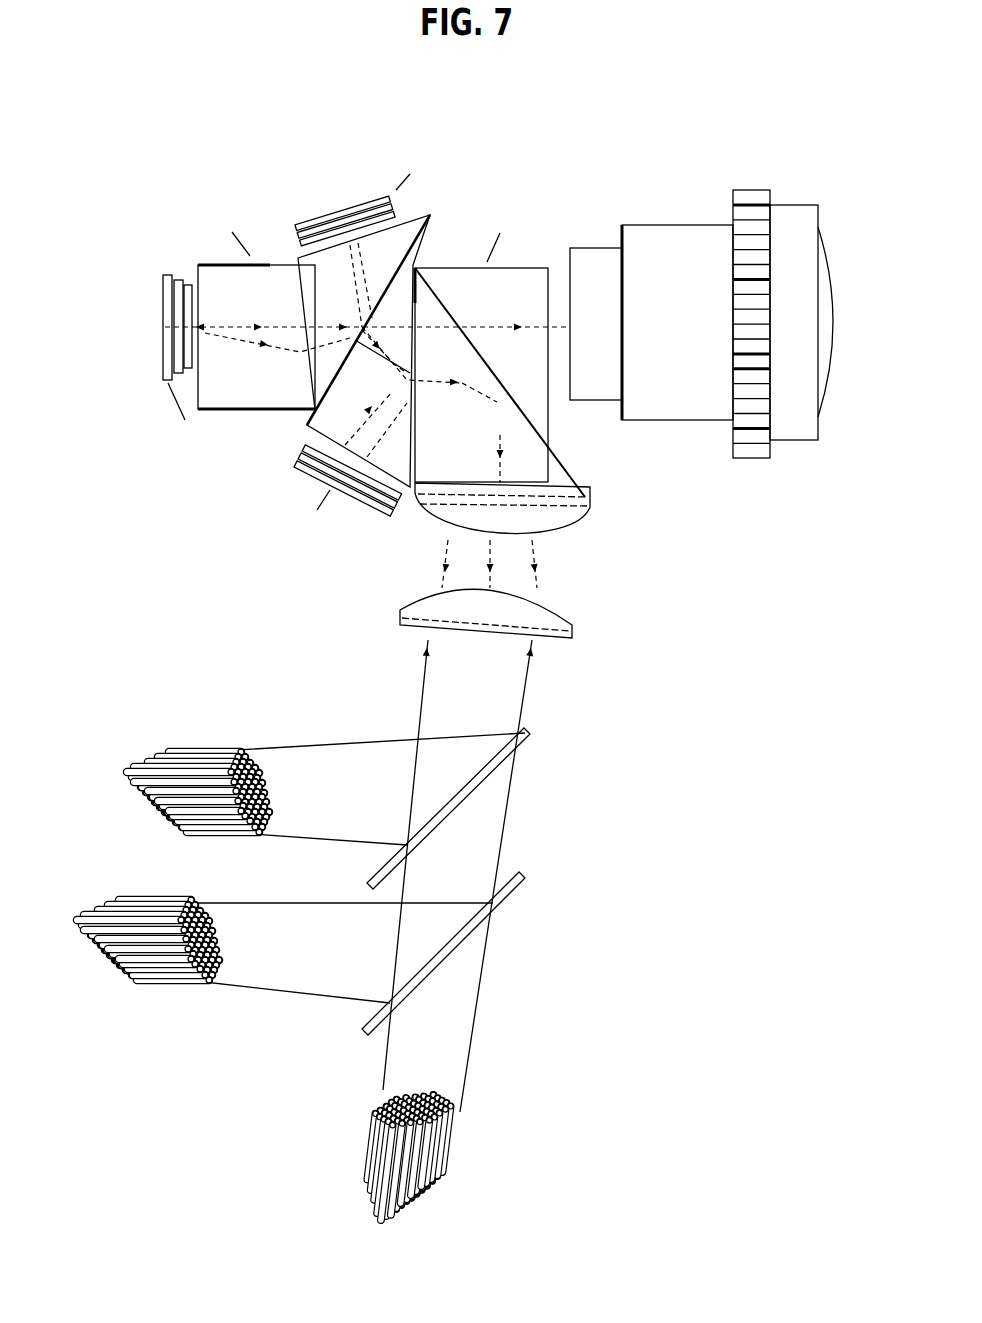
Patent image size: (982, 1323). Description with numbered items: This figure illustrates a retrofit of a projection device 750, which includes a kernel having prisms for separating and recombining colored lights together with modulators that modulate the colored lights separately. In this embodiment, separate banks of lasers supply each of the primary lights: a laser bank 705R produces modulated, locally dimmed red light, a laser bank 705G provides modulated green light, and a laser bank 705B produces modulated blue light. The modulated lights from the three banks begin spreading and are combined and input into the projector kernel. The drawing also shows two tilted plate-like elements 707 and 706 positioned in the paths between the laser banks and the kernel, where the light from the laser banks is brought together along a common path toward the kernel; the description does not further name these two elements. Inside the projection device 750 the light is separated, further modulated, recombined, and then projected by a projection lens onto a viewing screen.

The laser bank 705G is at (129, 771).
The laser bank 705B is at (87, 922).
The laser bank 705R is at (358, 1118).
The dichroic mirror 706 is at (461, 953).
The dichroic mirror 707 is at (467, 808).
The projection device 750 is at (237, 553).